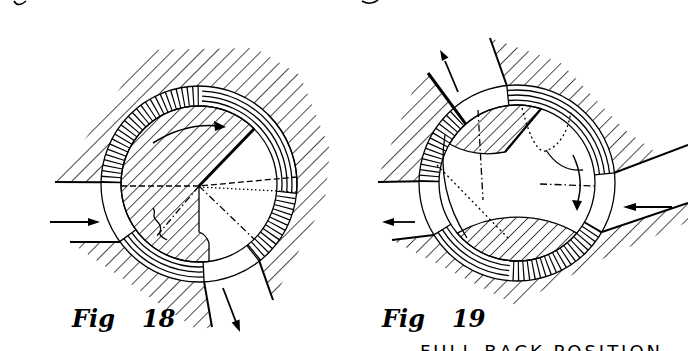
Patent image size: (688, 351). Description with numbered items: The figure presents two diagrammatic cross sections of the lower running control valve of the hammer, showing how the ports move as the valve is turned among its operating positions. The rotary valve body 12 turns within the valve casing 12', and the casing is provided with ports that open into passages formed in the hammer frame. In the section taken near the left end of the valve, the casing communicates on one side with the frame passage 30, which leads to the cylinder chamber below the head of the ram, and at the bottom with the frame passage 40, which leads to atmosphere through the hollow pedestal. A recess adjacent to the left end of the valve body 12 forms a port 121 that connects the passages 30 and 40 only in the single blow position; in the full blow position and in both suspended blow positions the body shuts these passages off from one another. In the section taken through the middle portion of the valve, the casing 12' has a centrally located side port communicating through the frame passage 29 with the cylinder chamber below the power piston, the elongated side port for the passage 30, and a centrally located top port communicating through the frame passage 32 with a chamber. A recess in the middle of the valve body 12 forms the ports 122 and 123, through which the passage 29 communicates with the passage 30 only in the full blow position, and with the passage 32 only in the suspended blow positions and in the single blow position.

In FIG. 18, the valve body 12 is at (209, 184).
In FIG. 19, the valve body 12 is at (516, 185).
In FIG. 18, the valve casing 12' is at (199, 164).
In FIG. 19, the valve casing 12' is at (517, 162).
In FIG. 18, the port 121 is at (298, 128).
In FIG. 19, the port 122 is at (583, 169).
In FIG. 19, the port 123 is at (460, 158).
In FIG. 19, the frame passage 29 is at (645, 188).
In FIG. 18, the frame passage 30 is at (85, 212).
In FIG. 19, the frame passage 30 is at (406, 210).
In FIG. 19, the frame passage 32 is at (467, 81).
In FIG. 18, the frame passage 40 is at (238, 296).